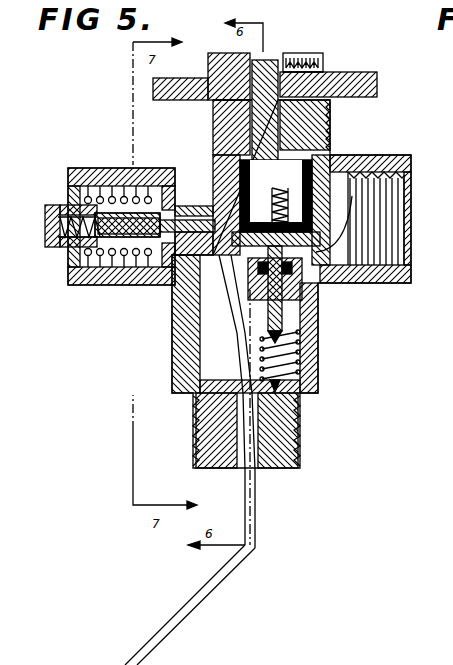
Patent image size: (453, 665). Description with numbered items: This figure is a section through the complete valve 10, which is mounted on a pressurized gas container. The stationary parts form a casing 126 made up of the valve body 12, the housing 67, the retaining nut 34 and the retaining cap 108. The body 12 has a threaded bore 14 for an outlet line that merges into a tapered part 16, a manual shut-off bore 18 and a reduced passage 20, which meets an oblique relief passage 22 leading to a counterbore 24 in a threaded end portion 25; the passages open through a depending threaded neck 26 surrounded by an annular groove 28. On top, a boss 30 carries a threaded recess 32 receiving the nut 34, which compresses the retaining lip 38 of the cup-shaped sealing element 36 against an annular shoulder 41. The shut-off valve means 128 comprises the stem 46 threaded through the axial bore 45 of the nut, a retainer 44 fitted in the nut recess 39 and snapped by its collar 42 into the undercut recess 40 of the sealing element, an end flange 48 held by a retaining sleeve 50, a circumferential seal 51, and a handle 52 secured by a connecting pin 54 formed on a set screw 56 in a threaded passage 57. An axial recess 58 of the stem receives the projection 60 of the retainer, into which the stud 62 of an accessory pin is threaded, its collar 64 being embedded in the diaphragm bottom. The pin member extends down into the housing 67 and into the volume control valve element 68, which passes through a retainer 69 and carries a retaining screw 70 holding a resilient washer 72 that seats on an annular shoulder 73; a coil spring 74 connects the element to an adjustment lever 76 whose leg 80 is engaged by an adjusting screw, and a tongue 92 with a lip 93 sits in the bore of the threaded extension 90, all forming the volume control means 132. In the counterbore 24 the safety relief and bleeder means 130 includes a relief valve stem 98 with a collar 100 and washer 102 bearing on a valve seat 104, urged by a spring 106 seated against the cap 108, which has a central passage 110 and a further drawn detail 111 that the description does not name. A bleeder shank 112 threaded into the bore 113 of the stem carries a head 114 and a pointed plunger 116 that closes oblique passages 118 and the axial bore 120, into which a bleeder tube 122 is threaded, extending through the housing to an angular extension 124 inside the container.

The valve 10 is at (374, 156).
The valve body 12 is at (211, 166).
The threaded bore 14 is at (396, 206).
The tapered part 16 is at (318, 243).
The manual shut-off bore 18 is at (312, 205).
The reduced passage 20 is at (340, 284).
The relief passage 22 is at (228, 290).
The counterbore 24 is at (118, 288).
The exteriorly threaded end portion 25 is at (112, 196).
The neck 26 is at (178, 288).
The annular groove 28 is at (160, 288).
The boss 30 is at (352, 153).
The threaded recess 32 is at (333, 96).
The retaining nut 34 is at (213, 123).
The sealing element 36 is at (228, 195).
The retaining lip 38 is at (331, 152).
The cylindrical recess 39 is at (306, 146).
The annular recess 40 is at (205, 262).
The annular shoulder 41 is at (385, 212).
The annular collar 42 is at (312, 222).
The retainer 44 is at (314, 180).
The axial bore 45 is at (266, 140).
The shut-off valve stem 46 is at (240, 138).
The end flange 48 is at (200, 210).
The retaining sleeve 50 is at (226, 175).
The sealing element 51 is at (238, 162).
The valve handle 52 is at (301, 54).
The connecting pin 54 is at (240, 54).
The set screw 56 is at (320, 62).
The threaded passage 57 is at (320, 72).
The axial recess 58 is at (258, 176).
The axial projection 60 is at (280, 188).
The threaded stud 62 is at (286, 241).
The collar 64 is at (250, 240).
The housing 67 is at (178, 350).
The volume control valve element 68 is at (283, 334).
The volume control valve element retainer 69 is at (262, 322).
The retaining screw 70 is at (308, 300).
The resilient washer 72 is at (300, 338).
The annular shoulder 73 is at (238, 312).
The coil spring 74 is at (285, 384).
The adjustment lever 76 is at (300, 413).
The leg 80 is at (240, 351).
The extension 90 is at (301, 448).
The tongue 92 is at (239, 470).
The lip 93 is at (258, 470).
The relief valve stem 98 is at (70, 256).
The collar 100 is at (146, 213).
The washer 102 is at (126, 284).
The annular valve seat 104 is at (166, 233).
The coil spring 106 is at (98, 284).
The retaining cap 108 is at (75, 170).
The passage 110 is at (80, 212).
The spring 111 is at (86, 196).
The threaded shank 112 is at (58, 225).
The threaded bore 113 is at (48, 235).
The head 114 is at (60, 248).
The plunger 116 is at (75, 280).
The obliquely disposed passages 118 is at (128, 197).
The axial bore 120 is at (160, 186).
The bleeder tube 122 is at (222, 430).
The angular extension 124 is at (181, 621).
The casing 126 is at (355, 285).
The shut-off valve means 128 is at (376, 90).
The safety relief and bleeder means 130 is at (86, 288).
The volume control means 132 is at (320, 352).